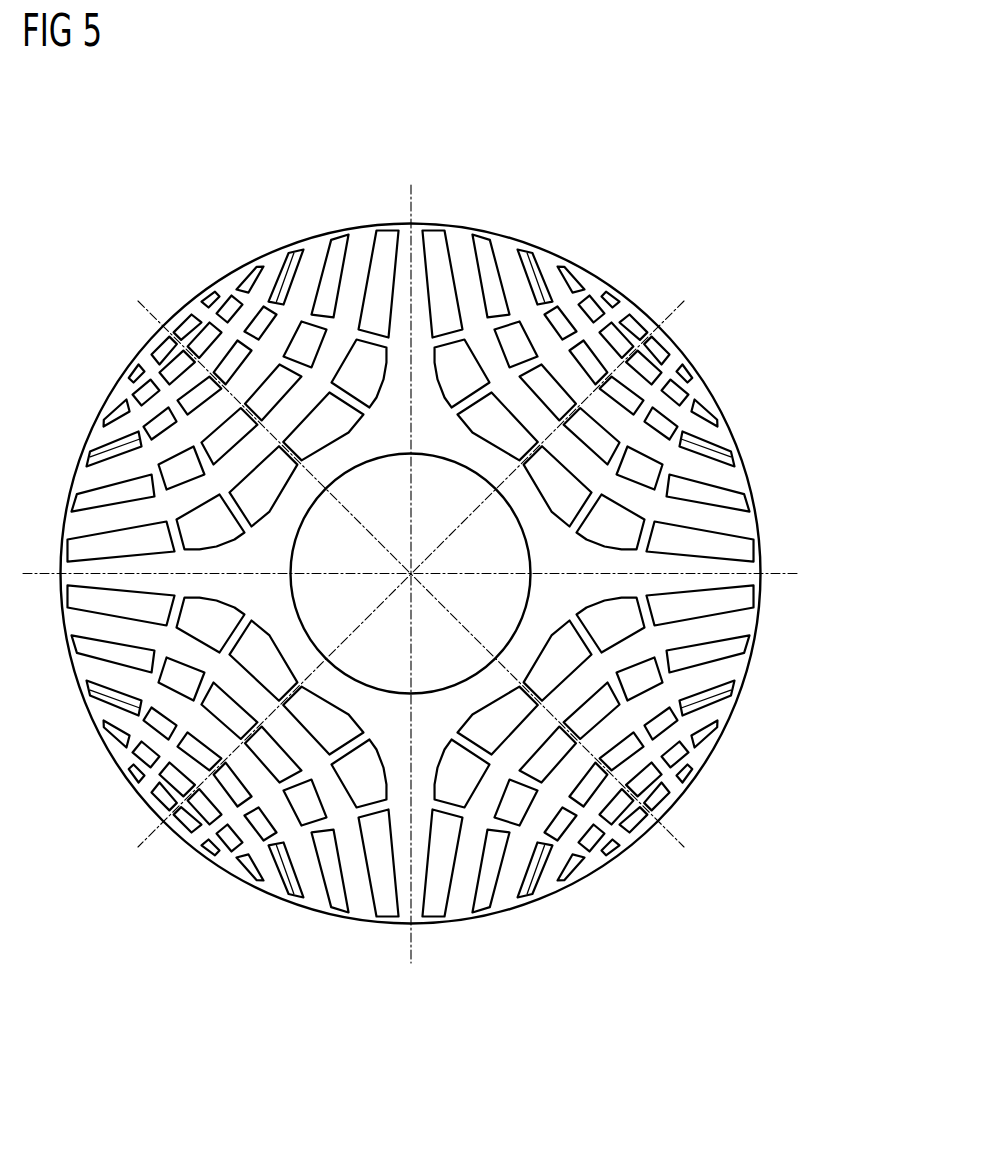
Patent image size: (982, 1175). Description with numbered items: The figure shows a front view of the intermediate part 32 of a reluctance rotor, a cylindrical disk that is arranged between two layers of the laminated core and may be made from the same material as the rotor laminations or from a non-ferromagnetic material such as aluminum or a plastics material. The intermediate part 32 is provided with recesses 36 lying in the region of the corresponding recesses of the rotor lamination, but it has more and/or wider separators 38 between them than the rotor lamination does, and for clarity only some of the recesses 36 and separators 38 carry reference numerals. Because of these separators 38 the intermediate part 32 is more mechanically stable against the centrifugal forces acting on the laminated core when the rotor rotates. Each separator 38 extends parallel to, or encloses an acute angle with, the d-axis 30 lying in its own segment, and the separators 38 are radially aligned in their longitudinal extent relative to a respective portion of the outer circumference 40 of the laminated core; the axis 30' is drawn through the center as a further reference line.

The d-axis 30 is at (411, 549).
The quadrature axis 30' is at (410, 571).
The intermediate part 32 is at (410, 563).
The recesses 36 is at (383, 233).
The separators 38 is at (497, 308).
The outer circumference 40 is at (556, 247).